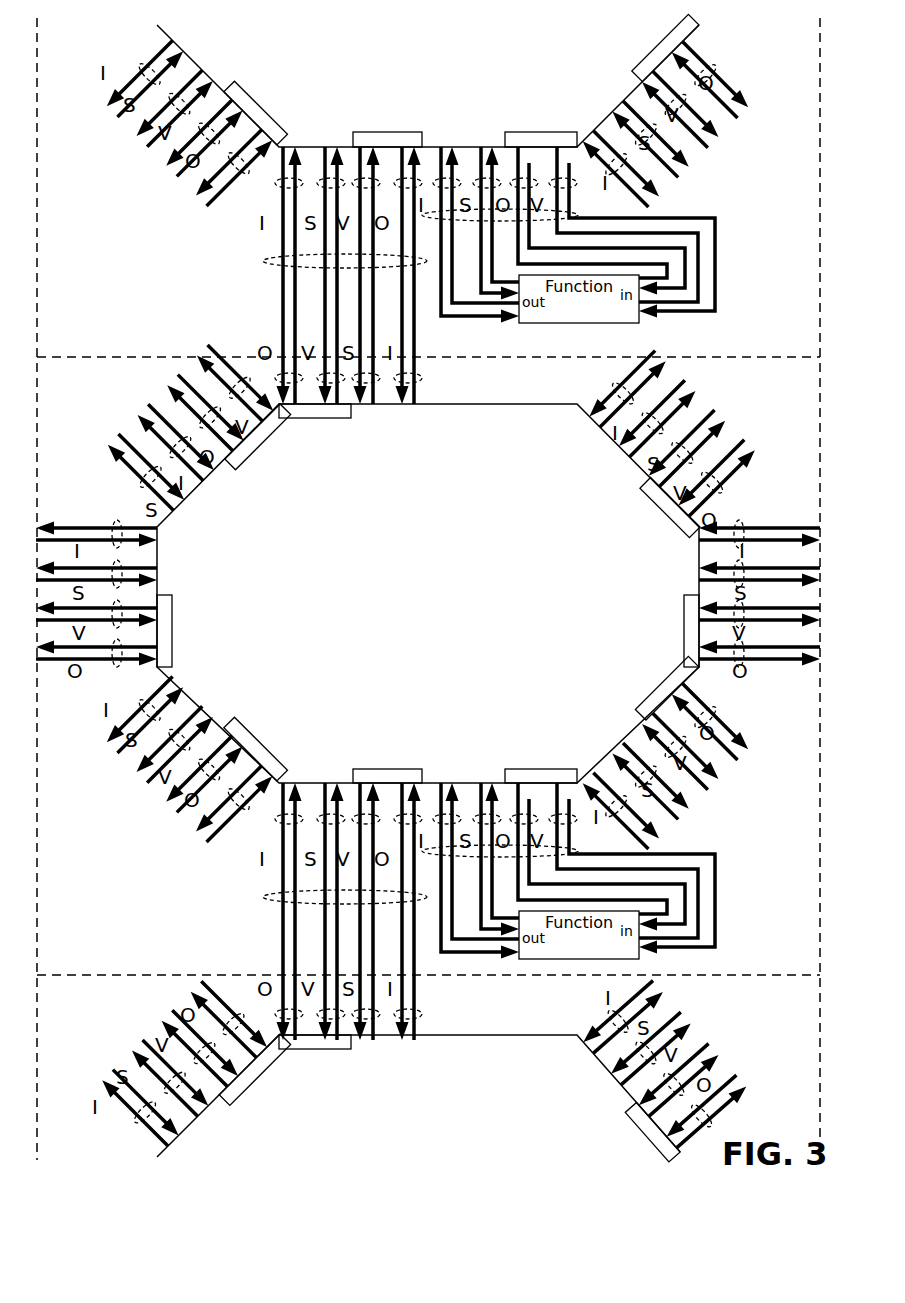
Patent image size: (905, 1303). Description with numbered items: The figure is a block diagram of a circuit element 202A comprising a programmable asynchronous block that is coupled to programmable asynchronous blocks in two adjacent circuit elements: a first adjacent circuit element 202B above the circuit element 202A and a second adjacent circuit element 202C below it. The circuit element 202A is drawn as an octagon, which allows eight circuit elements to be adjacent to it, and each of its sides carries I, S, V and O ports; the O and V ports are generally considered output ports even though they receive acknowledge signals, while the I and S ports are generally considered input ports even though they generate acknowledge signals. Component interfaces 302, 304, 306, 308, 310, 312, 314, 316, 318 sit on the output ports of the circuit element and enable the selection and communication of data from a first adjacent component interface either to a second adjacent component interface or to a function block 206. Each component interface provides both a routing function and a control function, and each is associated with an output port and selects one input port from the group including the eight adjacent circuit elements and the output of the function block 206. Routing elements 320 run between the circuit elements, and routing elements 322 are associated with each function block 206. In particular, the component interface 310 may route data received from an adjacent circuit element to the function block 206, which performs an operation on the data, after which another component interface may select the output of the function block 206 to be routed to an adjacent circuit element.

The circuit element 202A is at (808, 383).
The first adjacent circuit element 202B is at (808, 48).
The second adjacent circuit element 202C is at (806, 1039).
The function block 206 is at (636, 324).
The component interface 302 is at (318, 420).
The component interface 304 is at (662, 522).
The component interface 306 is at (684, 620).
The component interface 308 is at (665, 680).
The component interface 310 is at (568, 770).
The component interface 312 is at (355, 769).
The component interface 314 is at (264, 744).
The component interface 316 is at (173, 602).
The component interface 318 is at (250, 457).
The routing elements 320 is at (270, 264).
The routing elements 322 is at (576, 211).